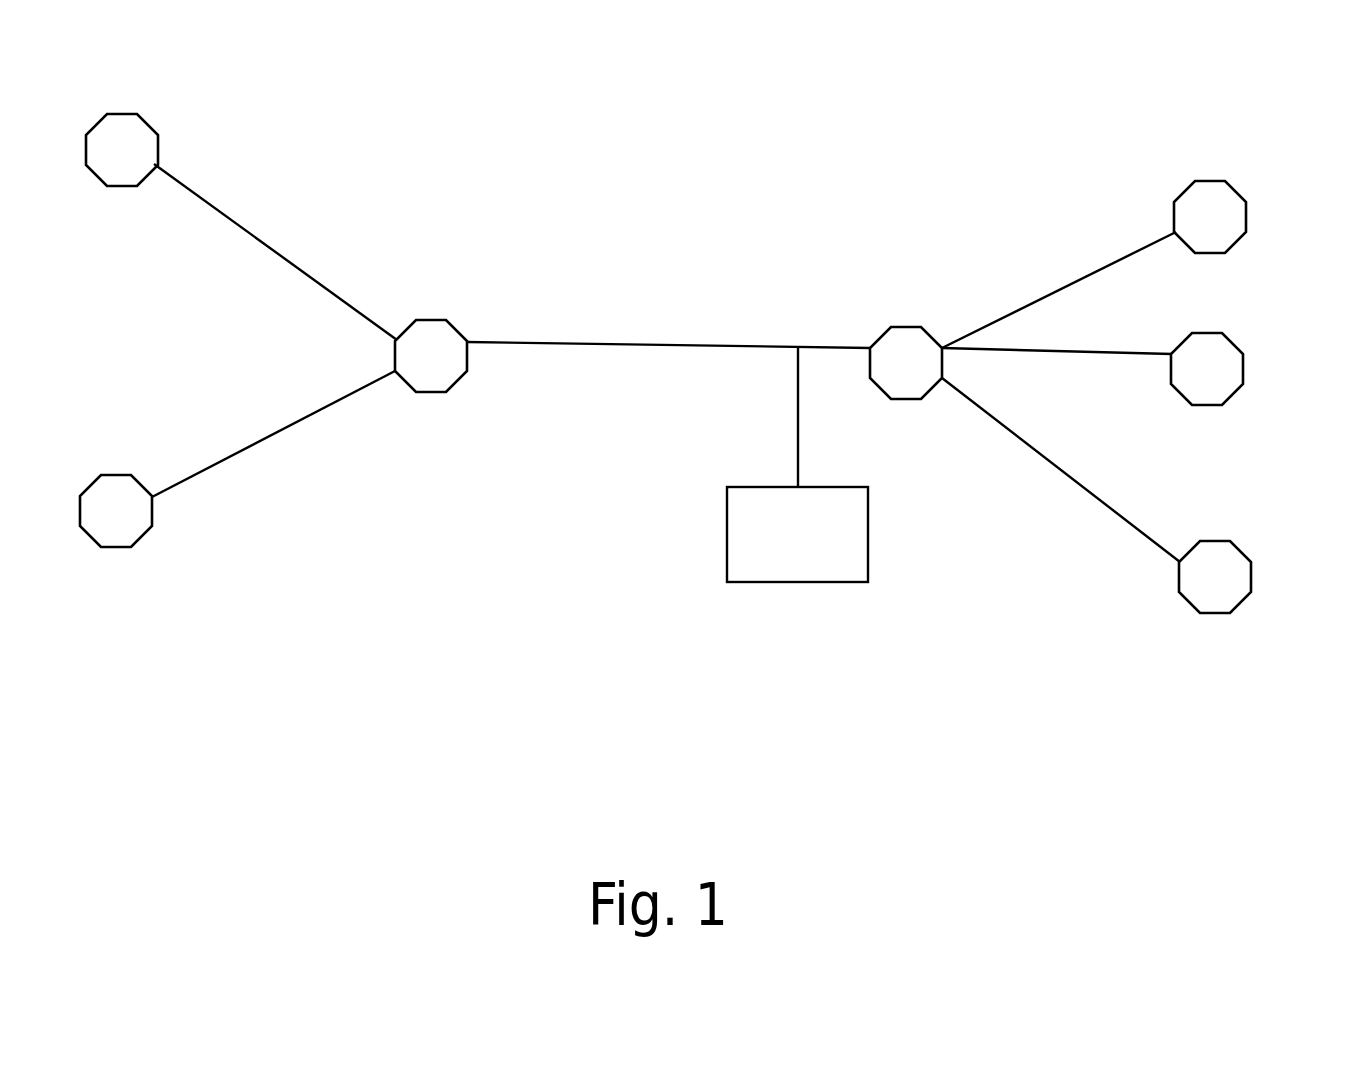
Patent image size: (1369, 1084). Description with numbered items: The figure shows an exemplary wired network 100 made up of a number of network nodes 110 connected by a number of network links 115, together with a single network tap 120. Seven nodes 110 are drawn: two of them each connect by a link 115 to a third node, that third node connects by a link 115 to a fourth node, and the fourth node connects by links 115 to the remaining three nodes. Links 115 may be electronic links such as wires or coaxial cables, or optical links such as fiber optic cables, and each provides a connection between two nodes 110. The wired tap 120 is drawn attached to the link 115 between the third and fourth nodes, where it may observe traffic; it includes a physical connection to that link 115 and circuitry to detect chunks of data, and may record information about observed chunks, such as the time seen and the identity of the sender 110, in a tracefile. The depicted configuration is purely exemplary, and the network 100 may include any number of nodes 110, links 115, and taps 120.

The wired network 100 is at (1032, 714).
The network node 110 is at (124, 480).
The network link 115 is at (268, 242).
The network tap 120 is at (866, 534).